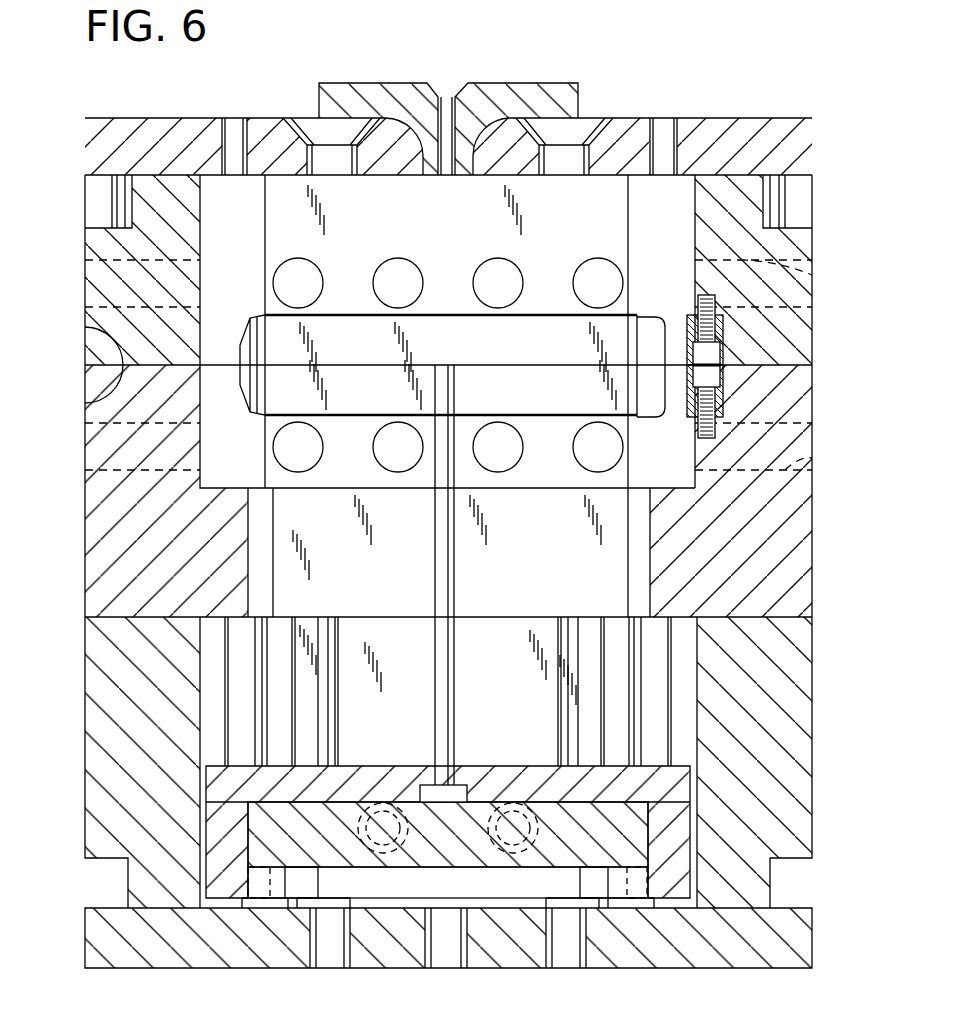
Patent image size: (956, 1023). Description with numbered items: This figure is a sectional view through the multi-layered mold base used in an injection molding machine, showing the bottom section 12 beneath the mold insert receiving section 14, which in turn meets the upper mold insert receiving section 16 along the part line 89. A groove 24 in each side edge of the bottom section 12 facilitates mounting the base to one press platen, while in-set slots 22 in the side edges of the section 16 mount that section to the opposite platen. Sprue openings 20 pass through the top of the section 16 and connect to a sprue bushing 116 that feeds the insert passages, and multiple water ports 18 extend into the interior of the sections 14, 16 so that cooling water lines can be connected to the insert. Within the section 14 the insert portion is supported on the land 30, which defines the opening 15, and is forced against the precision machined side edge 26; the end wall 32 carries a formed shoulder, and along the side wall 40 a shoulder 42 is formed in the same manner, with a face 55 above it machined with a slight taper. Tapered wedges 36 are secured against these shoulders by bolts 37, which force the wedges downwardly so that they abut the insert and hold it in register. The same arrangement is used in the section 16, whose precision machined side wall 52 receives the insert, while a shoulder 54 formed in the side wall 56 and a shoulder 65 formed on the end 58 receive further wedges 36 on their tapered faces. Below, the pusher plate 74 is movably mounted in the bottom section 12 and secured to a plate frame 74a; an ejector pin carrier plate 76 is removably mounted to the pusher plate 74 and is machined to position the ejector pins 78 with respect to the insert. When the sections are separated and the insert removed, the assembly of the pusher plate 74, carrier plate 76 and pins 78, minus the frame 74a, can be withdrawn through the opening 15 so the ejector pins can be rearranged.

The bottom section 12 is at (85, 756).
The mold insert receiving section 14 is at (417, 491).
The opening 15 is at (250, 543).
The mold insert receiving section 16 is at (85, 307).
The water ports 18 is at (116, 270).
The sprue openings 20 is at (318, 150).
The in-set slots 22 is at (112, 211).
The groove 24 is at (113, 876).
The side edge 26 is at (204, 398).
The land 30 is at (240, 490).
The end wall 32 is at (86, 329).
The tapered wedge 36 is at (553, 360).
The bolts 37 is at (709, 393).
The side wall 40 is at (812, 560).
The shoulder 42 is at (722, 410).
The side wall 52 is at (232, 331).
The shoulder 54 is at (756, 343).
The face 55 is at (730, 345).
The side wall 56 is at (812, 250).
The end 58 is at (377, 224).
The shoulder 65 is at (440, 325).
The pusher plate 74 is at (605, 848).
The plate frame 74a is at (223, 882).
The ejector pin carrier plate 76 is at (447, 866).
The ejector pins 78 is at (455, 688).
The part line 89 is at (85, 367).
The sprue bushing 116 is at (363, 92).